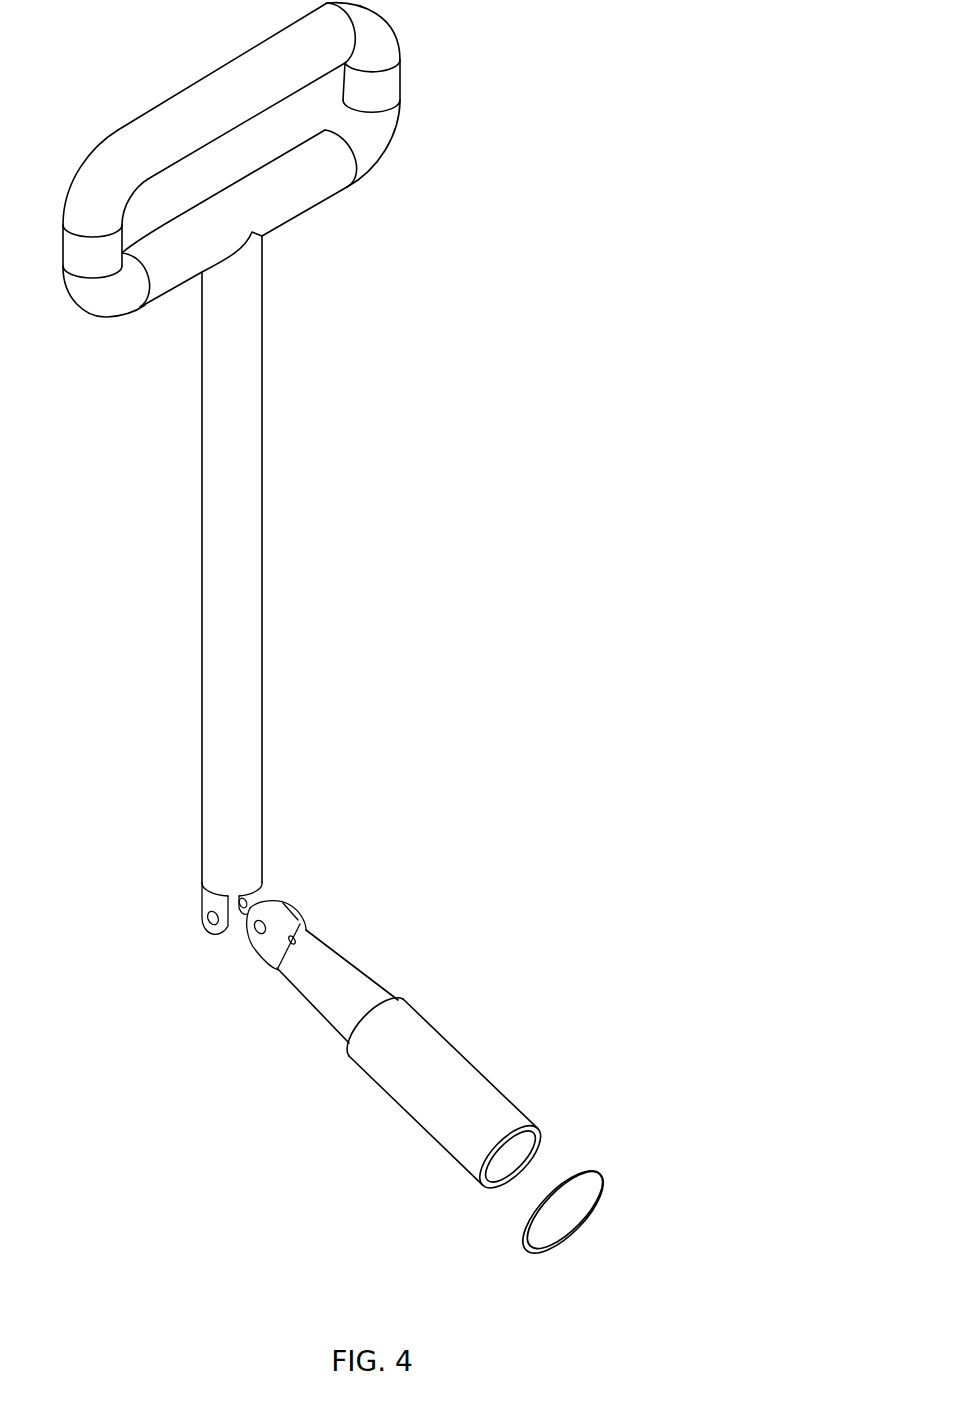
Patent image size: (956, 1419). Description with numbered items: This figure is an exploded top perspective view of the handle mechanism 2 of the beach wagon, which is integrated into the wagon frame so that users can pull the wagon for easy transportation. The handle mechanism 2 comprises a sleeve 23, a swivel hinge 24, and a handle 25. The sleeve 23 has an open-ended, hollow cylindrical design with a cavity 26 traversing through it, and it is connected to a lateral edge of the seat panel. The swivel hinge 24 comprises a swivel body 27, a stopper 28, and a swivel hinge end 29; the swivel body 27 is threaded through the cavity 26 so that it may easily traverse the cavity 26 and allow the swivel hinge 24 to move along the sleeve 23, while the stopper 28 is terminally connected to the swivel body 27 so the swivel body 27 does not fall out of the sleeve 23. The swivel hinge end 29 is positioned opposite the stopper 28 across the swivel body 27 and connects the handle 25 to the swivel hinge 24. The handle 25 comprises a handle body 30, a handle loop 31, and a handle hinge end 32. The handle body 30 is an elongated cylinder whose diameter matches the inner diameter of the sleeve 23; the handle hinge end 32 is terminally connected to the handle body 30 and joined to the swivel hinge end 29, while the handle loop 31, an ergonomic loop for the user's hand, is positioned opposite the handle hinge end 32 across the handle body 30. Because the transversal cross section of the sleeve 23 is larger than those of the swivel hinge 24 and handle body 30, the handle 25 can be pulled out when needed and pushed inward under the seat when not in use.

The handle mechanism 2 is at (510, 205).
The sleeve 23 is at (455, 1077).
The swivel hinge 24 is at (262, 1011).
The handle 25 is at (117, 395).
The cavity 26 is at (511, 1152).
The swivel body 27 is at (357, 996).
The stopper 28 is at (548, 1243).
The swivel hinge end 29 is at (287, 903).
The handle body 30 is at (238, 642).
The handle loop 31 is at (343, 177).
The handle hinge end 32 is at (212, 935).